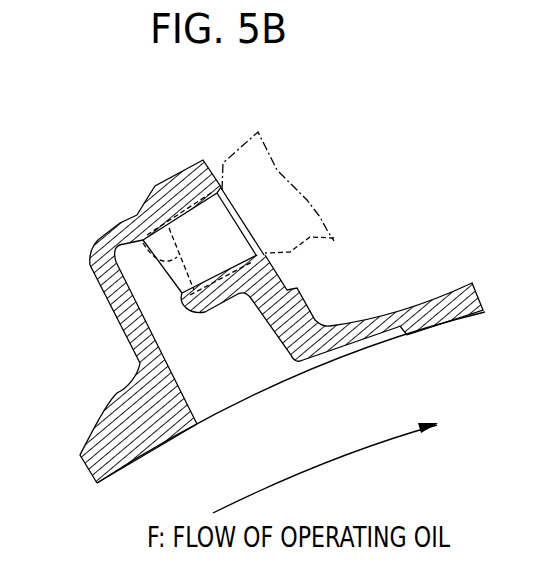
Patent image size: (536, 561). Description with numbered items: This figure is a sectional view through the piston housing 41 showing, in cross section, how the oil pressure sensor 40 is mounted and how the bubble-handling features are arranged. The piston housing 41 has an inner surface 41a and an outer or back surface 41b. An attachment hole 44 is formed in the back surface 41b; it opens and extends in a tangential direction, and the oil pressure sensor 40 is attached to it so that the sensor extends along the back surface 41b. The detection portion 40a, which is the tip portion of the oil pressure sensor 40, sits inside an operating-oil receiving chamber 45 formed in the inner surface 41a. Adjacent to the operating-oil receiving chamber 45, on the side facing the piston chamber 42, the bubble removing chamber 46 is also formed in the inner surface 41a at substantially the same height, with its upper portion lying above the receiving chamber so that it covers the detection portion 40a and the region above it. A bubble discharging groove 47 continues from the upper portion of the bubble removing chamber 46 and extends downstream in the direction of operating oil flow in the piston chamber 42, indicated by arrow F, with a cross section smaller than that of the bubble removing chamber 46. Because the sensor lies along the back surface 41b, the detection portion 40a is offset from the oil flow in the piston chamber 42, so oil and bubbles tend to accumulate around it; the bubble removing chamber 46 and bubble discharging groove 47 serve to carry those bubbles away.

The oil pressure sensor 40 is at (248, 173).
The detection portion 40a is at (141, 236).
The piston housing 41 is at (407, 291).
The inner surface 41a is at (170, 437).
The back surface 41b is at (118, 391).
The piston chamber 42 is at (357, 409).
The attachment hole 44 is at (197, 227).
The operating-oil receiving chamber 45 is at (133, 273).
The bubble removing chamber 46 is at (217, 373).
The bubble discharging groove 47 is at (368, 347).